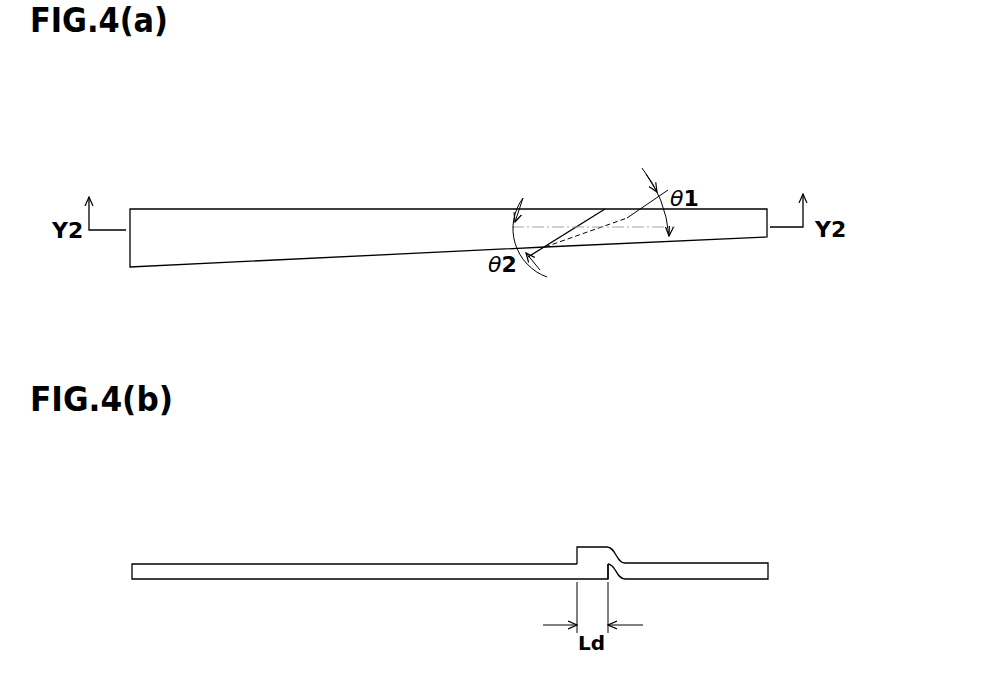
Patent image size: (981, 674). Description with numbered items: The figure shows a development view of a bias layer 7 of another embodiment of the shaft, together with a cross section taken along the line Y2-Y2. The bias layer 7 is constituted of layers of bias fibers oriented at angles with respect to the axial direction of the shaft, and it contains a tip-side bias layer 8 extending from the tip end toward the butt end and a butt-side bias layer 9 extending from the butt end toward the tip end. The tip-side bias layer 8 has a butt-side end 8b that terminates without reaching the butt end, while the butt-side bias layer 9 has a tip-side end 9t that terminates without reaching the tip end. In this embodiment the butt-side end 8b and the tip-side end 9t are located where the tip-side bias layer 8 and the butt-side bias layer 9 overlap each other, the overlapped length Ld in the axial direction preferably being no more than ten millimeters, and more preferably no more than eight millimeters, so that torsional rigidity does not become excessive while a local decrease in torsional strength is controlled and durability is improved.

In FIG. 4A, the bias layer 7 is at (448, 145).
In FIG. 4A, the tip-side bias layer 8 is at (553, 75).
In FIG. 4B, the tip-side bias layer 8 is at (728, 572).
In FIG. 4A, the butt-side bias layer 9 is at (455, 227).
In FIG. 4B, the butt-side bias layer 9 is at (282, 577).
In FIG. 4A, the butt-side end 8b is at (562, 230).
In FIG. 4B, the butt-side end 8b is at (577, 557).
In FIG. 4A, the tip-side end 9t is at (630, 212).
In FIG. 4B, the tip-side end 9t is at (612, 572).